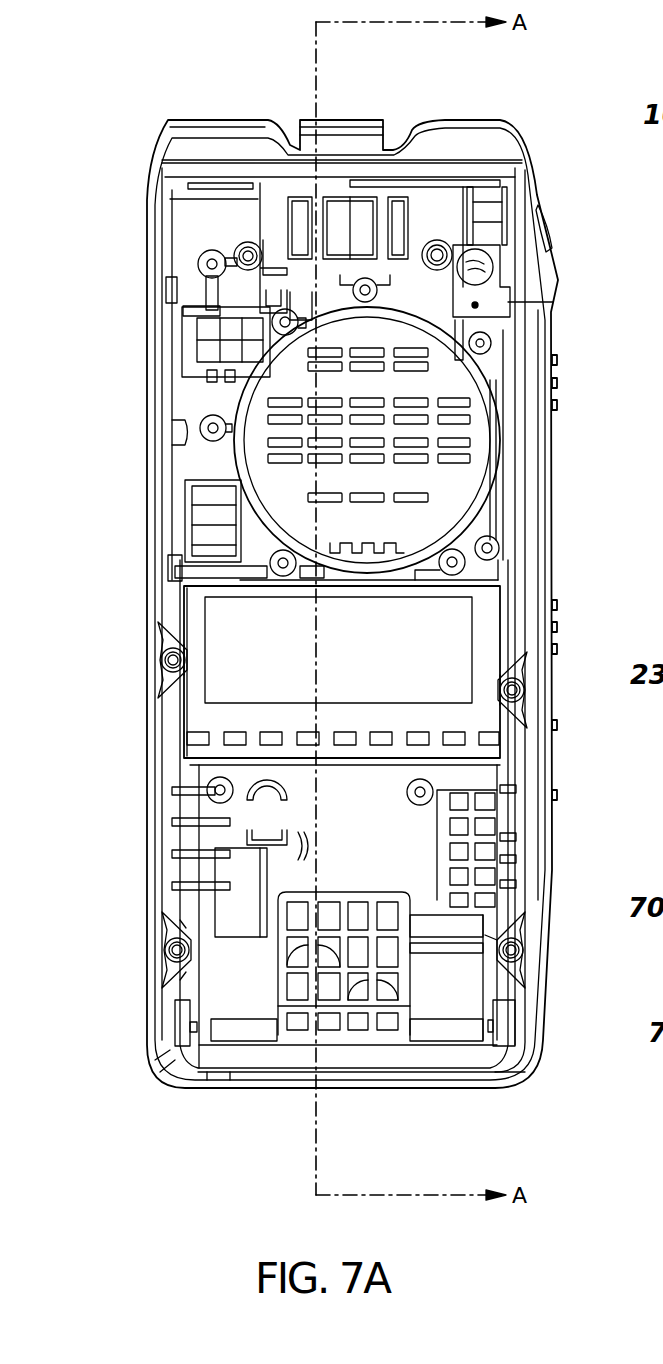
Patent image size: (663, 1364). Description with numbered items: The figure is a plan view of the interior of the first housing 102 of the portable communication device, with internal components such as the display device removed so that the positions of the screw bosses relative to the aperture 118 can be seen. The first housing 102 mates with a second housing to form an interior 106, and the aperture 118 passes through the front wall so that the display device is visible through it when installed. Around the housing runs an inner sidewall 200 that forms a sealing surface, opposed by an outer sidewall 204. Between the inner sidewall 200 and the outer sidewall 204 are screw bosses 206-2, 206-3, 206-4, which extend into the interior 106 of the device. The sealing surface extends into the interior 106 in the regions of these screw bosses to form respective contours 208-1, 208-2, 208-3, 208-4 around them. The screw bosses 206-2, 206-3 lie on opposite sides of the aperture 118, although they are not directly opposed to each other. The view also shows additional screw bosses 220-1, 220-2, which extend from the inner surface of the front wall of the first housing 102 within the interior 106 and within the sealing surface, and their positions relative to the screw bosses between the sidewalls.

The first housing 102 is at (168, 143).
The interior 106 is at (190, 551).
The aperture 118 is at (478, 610).
The inner sidewall 200 is at (160, 622).
The outer sidewall 204 is at (150, 712).
The screw boss 206-2 is at (162, 660).
The screw boss 206-3 is at (524, 690).
The screw boss 206-4 is at (523, 950).
The contour 208-1 is at (175, 930).
The contour 208-2 is at (188, 660).
The contour 208-3 is at (498, 690).
The contour 208-4 is at (490, 945).
The additional screw boss 220-1 is at (202, 257).
The additional screw boss 220-2 is at (438, 235).